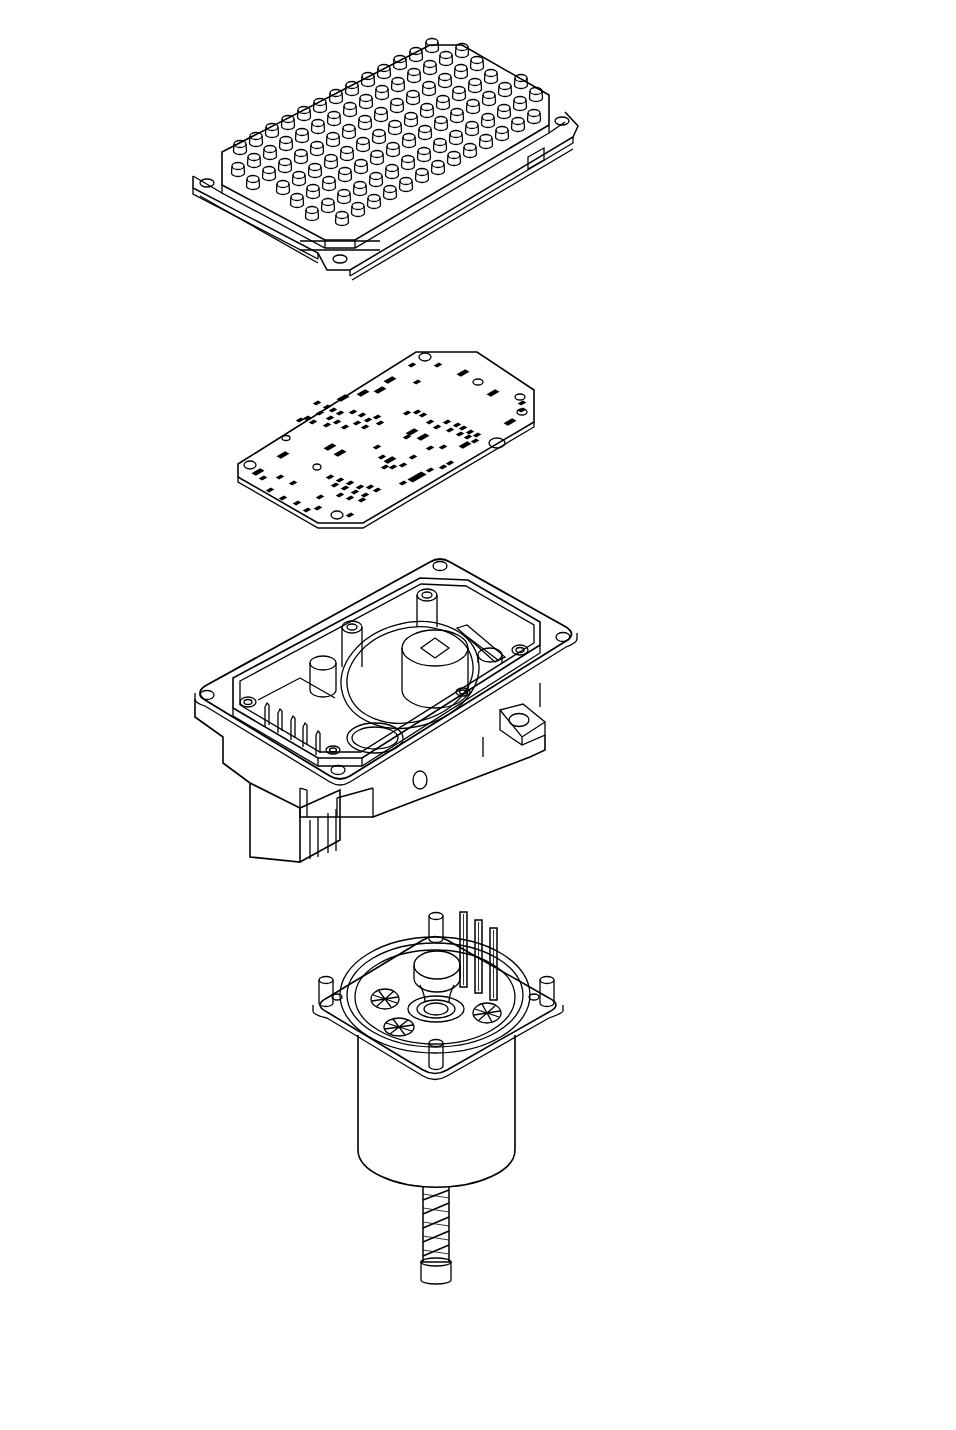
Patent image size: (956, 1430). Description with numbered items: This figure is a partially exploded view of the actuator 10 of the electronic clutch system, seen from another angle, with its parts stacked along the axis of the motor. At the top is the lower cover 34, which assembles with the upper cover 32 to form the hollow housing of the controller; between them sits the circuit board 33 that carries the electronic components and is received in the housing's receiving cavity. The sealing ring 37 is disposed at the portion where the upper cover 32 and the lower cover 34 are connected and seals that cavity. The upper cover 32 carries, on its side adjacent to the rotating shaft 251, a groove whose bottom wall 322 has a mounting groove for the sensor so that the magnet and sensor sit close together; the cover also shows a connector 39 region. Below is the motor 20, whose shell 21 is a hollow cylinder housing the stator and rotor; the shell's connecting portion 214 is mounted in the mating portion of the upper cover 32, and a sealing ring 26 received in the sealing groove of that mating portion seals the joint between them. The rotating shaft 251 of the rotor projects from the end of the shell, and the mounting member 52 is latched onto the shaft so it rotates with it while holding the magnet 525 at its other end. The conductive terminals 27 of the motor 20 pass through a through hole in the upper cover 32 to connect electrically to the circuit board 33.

The actuator 10 is at (172, 43).
The lower cover 34 is at (548, 92).
The circuit board 33 is at (480, 380).
The sealing ring 37 is at (507, 585).
The upper cover 32 is at (562, 657).
The bottom wall 322 is at (510, 680).
The connector 39 is at (270, 827).
The motor 20 is at (340, 1093).
The shell 21 is at (500, 1098).
The connecting portion 214 is at (527, 1022).
The sealing ring 26 is at (373, 958).
The mounting member 52 is at (503, 955).
The magnet 525 is at (430, 958).
The conductive terminals 27 is at (463, 913).
The rotating shaft 251 is at (433, 1008).